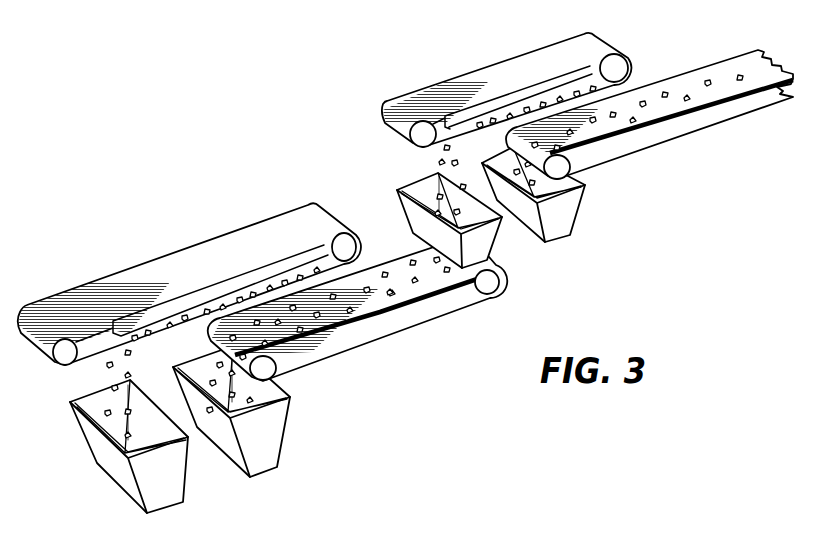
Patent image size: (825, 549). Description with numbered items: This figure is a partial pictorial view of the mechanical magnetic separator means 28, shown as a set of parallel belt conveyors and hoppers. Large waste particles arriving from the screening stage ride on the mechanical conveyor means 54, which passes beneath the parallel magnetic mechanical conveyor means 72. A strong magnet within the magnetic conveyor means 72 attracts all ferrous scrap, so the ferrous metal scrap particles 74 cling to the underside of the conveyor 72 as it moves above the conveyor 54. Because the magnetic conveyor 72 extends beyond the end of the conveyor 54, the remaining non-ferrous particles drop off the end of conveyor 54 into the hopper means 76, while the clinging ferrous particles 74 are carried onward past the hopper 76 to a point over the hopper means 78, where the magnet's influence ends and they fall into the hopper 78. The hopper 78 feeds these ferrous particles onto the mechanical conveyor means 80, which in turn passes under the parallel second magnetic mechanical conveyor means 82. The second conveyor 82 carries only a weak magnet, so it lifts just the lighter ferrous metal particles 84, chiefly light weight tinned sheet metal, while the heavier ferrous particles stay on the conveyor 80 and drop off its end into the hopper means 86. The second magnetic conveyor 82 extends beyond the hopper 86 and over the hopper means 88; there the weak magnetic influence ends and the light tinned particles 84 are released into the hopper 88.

The mechanical magnetic separator means 28 is at (189, 339).
The mechanical conveyor means 54 is at (709, 63).
The magnetic mechanical conveyor means 72 is at (611, 45).
The ferrous metal scrap particles 74 is at (496, 131).
The hopper means 76 is at (578, 212).
The hopper means 78 is at (495, 255).
The mechanical conveyor means 80 is at (441, 316).
The second magnetic mechanical conveyor means 82 is at (330, 204).
The lighter ferrous metal particles 84 is at (197, 327).
The hopper means 86 is at (288, 420).
The hopper means 88 is at (186, 488).